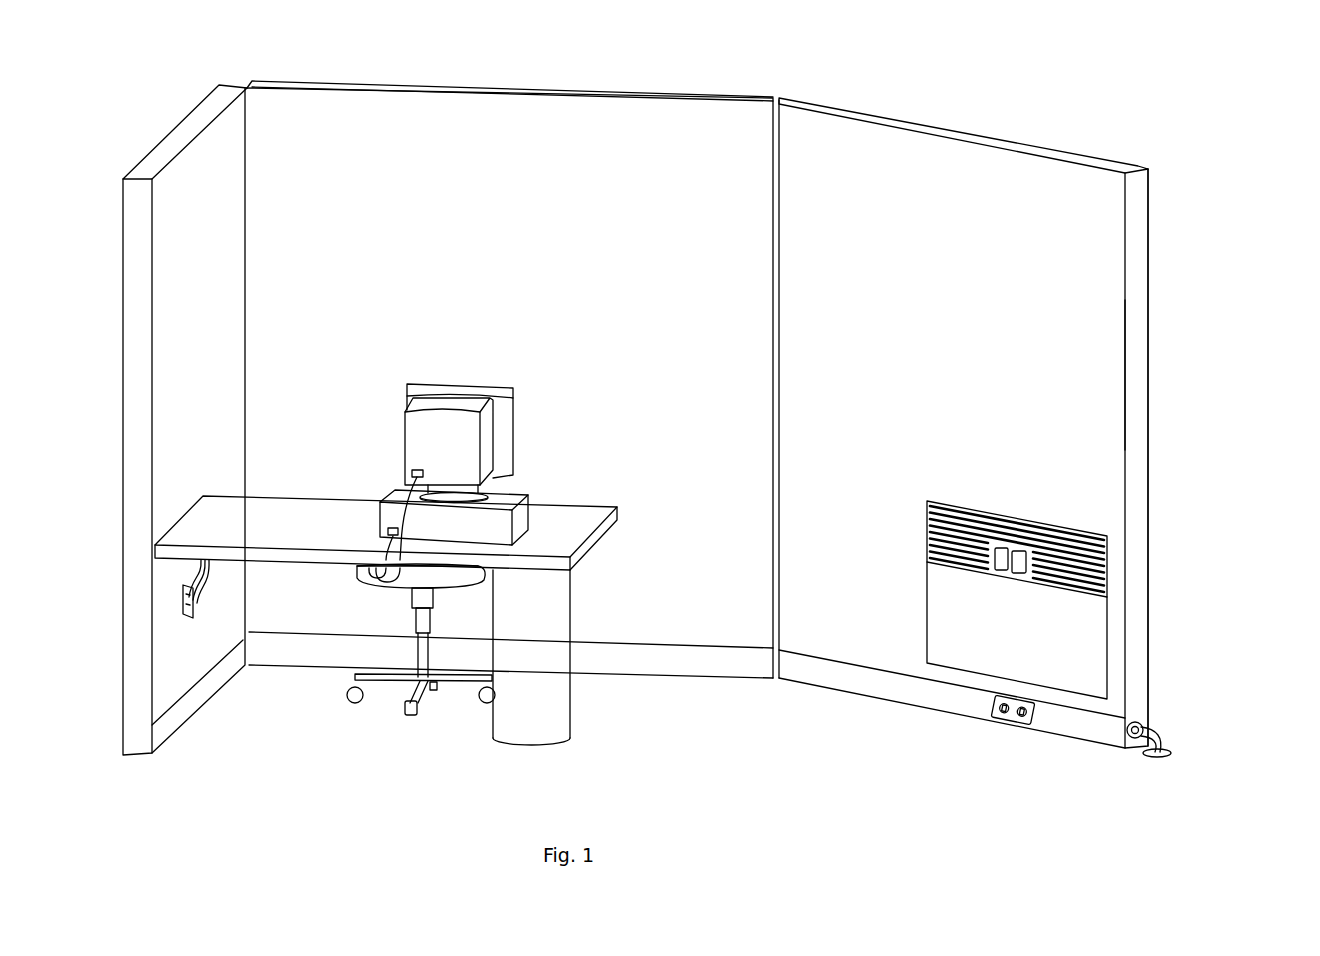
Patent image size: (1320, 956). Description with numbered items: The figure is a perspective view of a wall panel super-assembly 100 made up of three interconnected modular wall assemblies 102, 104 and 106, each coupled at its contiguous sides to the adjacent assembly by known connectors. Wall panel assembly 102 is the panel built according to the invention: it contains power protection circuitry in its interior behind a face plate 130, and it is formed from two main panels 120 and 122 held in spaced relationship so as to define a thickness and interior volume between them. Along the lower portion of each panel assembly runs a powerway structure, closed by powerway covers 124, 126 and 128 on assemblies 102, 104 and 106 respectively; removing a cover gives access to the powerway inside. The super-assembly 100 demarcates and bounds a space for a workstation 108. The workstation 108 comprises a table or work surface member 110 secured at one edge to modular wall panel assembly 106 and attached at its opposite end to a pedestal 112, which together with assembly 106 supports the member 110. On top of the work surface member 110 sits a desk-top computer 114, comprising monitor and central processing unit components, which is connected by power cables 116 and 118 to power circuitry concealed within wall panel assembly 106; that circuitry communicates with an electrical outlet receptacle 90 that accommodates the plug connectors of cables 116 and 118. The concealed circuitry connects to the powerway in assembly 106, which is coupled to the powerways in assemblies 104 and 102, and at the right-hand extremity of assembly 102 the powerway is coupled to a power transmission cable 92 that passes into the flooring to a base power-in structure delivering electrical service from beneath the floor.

The electrical outlet receptacle 90 is at (183, 595).
The power transmission cable 92 is at (1163, 745).
The wall panel super-assembly 100 is at (972, 117).
The wall panel assembly 102 is at (1092, 330).
The modular wall assembly 104 is at (426, 105).
The modular wall assembly 106 is at (205, 160).
The workstation 108 is at (578, 411).
The work surface member 110 is at (580, 530).
The pedestal 112 is at (548, 703).
The desk-top computer 114 is at (487, 455).
The power cable 116 is at (392, 535).
The power cable 118 is at (410, 475).
The main panel 120 is at (1150, 370).
The main panel 122 is at (1103, 442).
The powerway cover 124 is at (1082, 725).
The powerway cover 126 is at (695, 663).
The powerway cover 128 is at (198, 698).
The face plate 130 is at (965, 652).